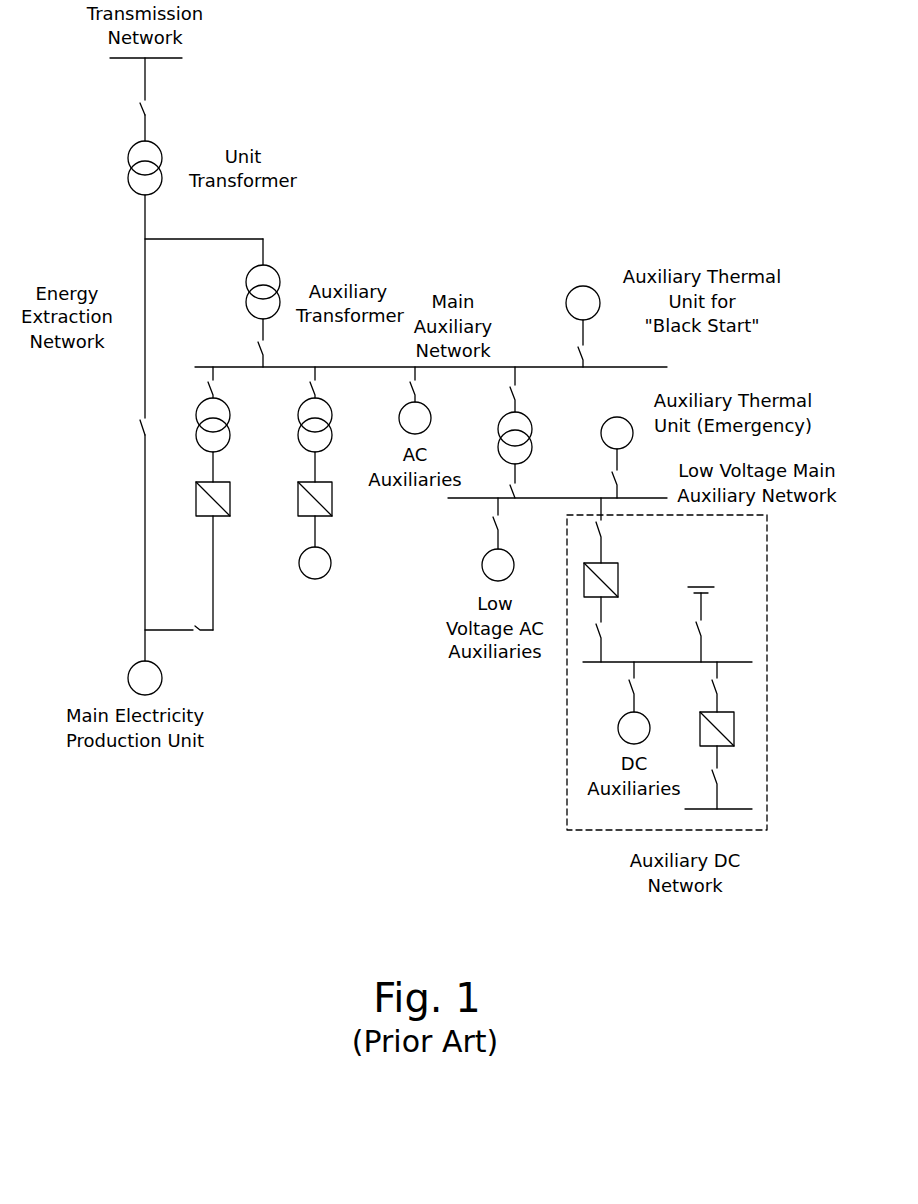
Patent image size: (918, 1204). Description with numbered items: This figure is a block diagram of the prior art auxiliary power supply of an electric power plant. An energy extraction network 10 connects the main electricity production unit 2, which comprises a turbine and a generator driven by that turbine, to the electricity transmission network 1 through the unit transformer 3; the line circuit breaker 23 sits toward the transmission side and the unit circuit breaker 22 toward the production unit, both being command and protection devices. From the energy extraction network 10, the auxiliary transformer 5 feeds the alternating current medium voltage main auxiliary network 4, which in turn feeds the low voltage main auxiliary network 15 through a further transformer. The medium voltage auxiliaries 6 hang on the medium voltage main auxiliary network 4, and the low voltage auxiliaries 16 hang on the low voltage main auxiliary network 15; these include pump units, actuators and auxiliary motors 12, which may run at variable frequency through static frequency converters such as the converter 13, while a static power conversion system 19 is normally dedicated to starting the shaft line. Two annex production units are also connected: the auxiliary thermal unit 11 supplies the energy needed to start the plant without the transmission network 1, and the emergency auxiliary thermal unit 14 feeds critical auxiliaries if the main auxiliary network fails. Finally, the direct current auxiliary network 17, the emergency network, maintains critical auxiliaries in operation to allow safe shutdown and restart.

The electricity transmission network 1 is at (178, 64).
The main electricity production unit 2 is at (162, 682).
The unit transformer 3 is at (159, 151).
The medium voltage main auxiliary network 4 is at (512, 346).
The auxiliary transformer 5 is at (286, 296).
The medium voltage auxiliaries 6 is at (402, 409).
The energy extraction network 10 is at (112, 271).
The auxiliary thermal unit 11 is at (592, 288).
The auxiliary motors 12 is at (341, 608).
The static frequency converter 13 is at (351, 536).
The auxiliary thermal unit 14 is at (607, 418).
The low voltage main auxiliary network 15 is at (652, 485).
The low voltage auxiliaries 16 is at (483, 554).
The auxiliary network 17 is at (622, 664).
The static power conversion system 19 is at (238, 545).
The unit circuit breaker 22 is at (102, 443).
The line circuit breaker 23 is at (107, 122).